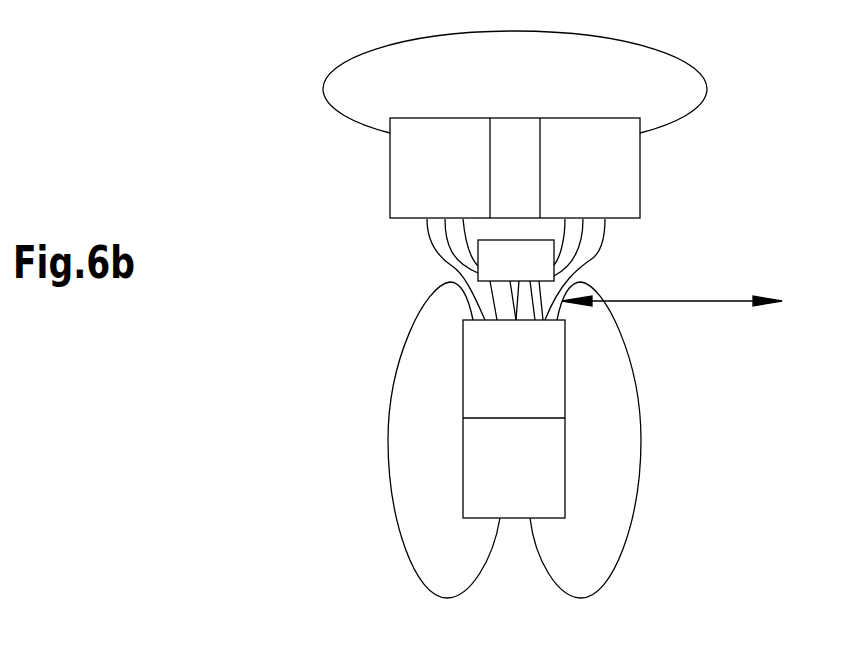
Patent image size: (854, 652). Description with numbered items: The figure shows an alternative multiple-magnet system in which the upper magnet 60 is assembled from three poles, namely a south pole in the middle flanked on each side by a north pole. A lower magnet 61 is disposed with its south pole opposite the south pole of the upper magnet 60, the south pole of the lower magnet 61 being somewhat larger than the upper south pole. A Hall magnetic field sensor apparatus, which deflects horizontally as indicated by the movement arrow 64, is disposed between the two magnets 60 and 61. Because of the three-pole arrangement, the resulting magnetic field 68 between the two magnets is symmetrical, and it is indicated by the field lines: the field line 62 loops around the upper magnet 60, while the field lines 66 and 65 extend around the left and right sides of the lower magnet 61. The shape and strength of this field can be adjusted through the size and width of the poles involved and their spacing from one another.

The magnet 60 is at (515, 118).
The lower magnet 61 is at (463, 398).
The field line 62 is at (363, 52).
The direction of movement arrow 64 is at (700, 301).
The field line 65 is at (641, 443).
The field line 66 is at (388, 438).
The symmetrical field 68 is at (427, 243).